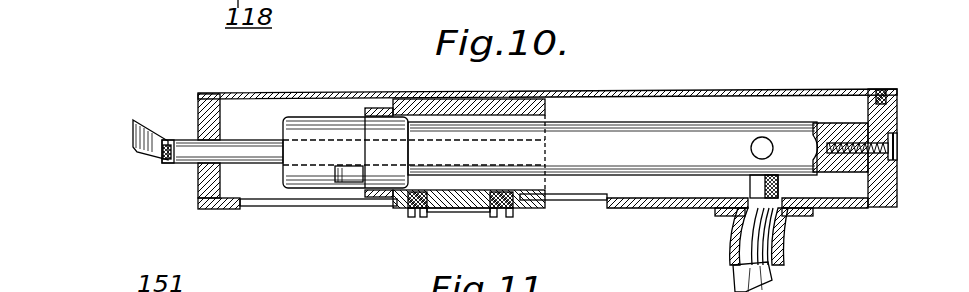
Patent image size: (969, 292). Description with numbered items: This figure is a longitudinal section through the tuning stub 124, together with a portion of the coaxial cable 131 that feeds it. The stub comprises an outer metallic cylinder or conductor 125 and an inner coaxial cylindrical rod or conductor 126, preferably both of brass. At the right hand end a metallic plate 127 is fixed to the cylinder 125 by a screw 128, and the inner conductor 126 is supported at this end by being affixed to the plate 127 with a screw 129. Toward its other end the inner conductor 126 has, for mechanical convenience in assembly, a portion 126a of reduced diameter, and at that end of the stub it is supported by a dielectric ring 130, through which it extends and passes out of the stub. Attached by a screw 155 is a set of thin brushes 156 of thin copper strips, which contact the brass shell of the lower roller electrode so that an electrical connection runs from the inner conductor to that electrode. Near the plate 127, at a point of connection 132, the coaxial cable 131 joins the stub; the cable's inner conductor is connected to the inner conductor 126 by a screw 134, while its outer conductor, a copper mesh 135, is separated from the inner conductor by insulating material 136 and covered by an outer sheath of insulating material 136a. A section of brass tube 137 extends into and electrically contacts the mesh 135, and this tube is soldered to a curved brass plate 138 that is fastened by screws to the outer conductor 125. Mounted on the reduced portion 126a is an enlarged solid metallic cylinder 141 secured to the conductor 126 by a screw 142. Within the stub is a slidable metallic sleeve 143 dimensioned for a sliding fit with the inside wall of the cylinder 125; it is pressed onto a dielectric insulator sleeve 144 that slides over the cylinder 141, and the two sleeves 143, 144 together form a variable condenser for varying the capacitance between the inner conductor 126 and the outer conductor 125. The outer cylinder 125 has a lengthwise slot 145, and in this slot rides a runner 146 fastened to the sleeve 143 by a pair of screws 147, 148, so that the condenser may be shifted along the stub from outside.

The tuning stub 124 is at (580, 78).
The outer metallic cylinder 125 is at (708, 90).
The inner coaxial cylindrical rod 126 is at (612, 148).
The portion of reduced diameter 126a is at (250, 148).
The metallic plate 127 is at (902, 97).
The screw 128 is at (880, 89).
The screw 129 is at (900, 148).
The dielectric ring 130 is at (196, 122).
The coaxial cable 131 is at (730, 265).
The point of connection 132 is at (745, 176).
The screw 134 is at (762, 152).
The copper mesh 135 is at (786, 258).
The insulating material 136 is at (773, 190).
The outer sheath of insulating material 136a is at (788, 285).
The brass tube 137 is at (792, 236).
The curved brass plate 138 is at (725, 210).
The enlarged solid metallic cylinder 141 is at (310, 128).
The screw 142 is at (348, 190).
The slidable metallic sleeve 143 is at (433, 98).
The dielectric insulator sleeve 144 is at (380, 114).
The lengthwise slot 145 is at (570, 198).
The runner 146 is at (468, 218).
The screw 147 is at (420, 218).
The screw 148 is at (505, 218).
The screw 155 is at (165, 160).
The thin brushes 156 is at (140, 148).